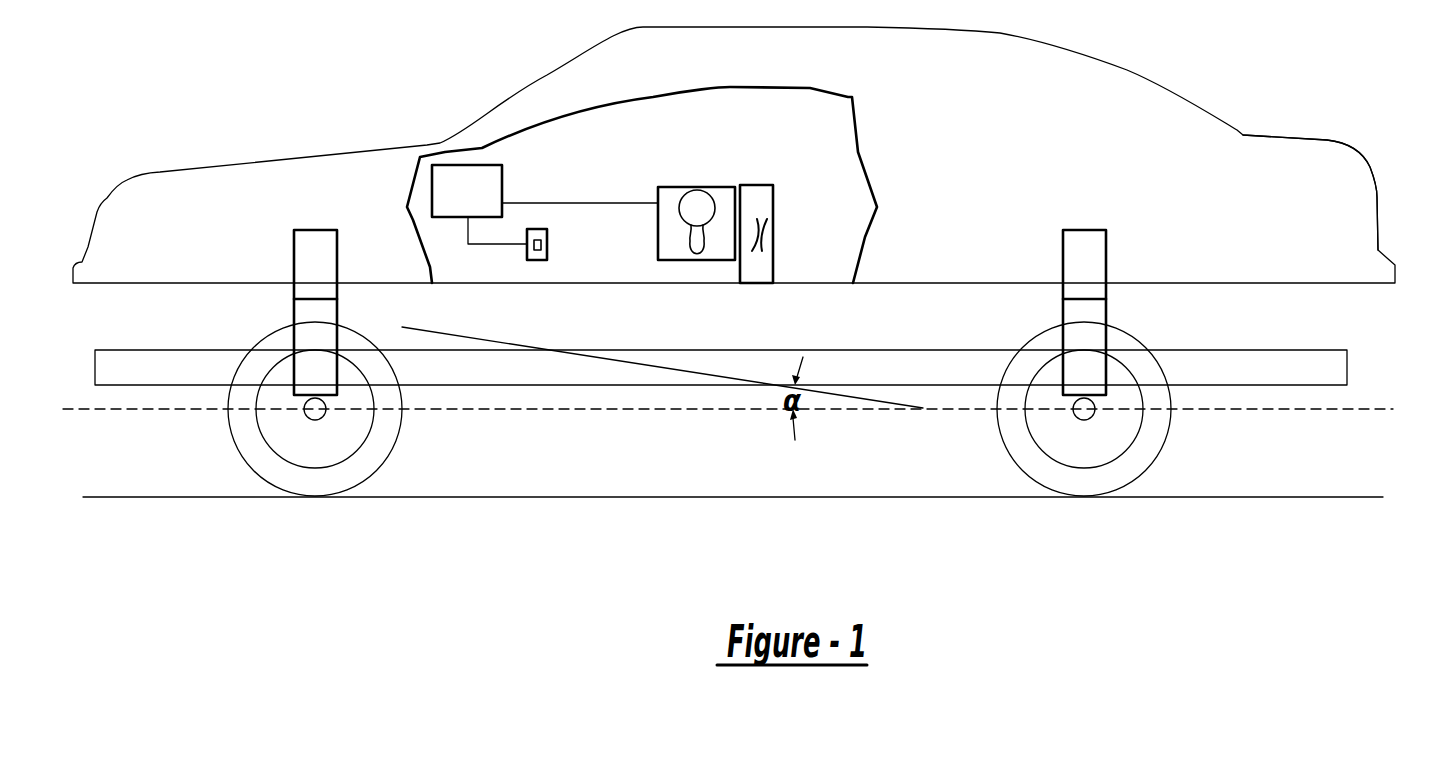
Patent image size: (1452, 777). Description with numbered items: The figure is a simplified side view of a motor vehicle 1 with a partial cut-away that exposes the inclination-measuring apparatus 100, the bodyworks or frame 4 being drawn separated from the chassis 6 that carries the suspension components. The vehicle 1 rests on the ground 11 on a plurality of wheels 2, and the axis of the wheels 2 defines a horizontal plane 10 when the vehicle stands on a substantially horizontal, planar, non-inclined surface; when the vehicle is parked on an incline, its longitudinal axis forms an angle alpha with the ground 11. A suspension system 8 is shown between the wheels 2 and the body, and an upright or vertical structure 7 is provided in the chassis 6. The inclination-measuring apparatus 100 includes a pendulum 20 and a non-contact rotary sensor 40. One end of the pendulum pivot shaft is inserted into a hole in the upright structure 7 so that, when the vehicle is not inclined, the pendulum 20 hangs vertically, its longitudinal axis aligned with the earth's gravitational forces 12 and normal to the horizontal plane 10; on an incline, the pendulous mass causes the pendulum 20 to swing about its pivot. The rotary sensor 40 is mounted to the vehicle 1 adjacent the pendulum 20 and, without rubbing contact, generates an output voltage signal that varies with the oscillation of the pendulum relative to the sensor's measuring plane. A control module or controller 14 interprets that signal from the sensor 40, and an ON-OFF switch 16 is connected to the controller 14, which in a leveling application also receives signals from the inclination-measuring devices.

The motor vehicle 1 is at (1230, 101).
The wheels 2 is at (390, 460).
The bodyworks or frame 4 is at (1347, 362).
The chassis 6 is at (1377, 197).
The upright or vertical structure 7 is at (773, 257).
The suspension system 8 is at (337, 263).
The horizontal plane 10 is at (1300, 410).
The ground 11 is at (223, 497).
The earth's gravitational forces 12 is at (715, 345).
The control module or controller 14 is at (457, 187).
The ON-OFF switch 16 is at (547, 244).
The pendulum 20 is at (707, 168).
The non-contact rotary sensor 40 is at (741, 171).
The inclination-measuring apparatus 100 is at (333, 111).